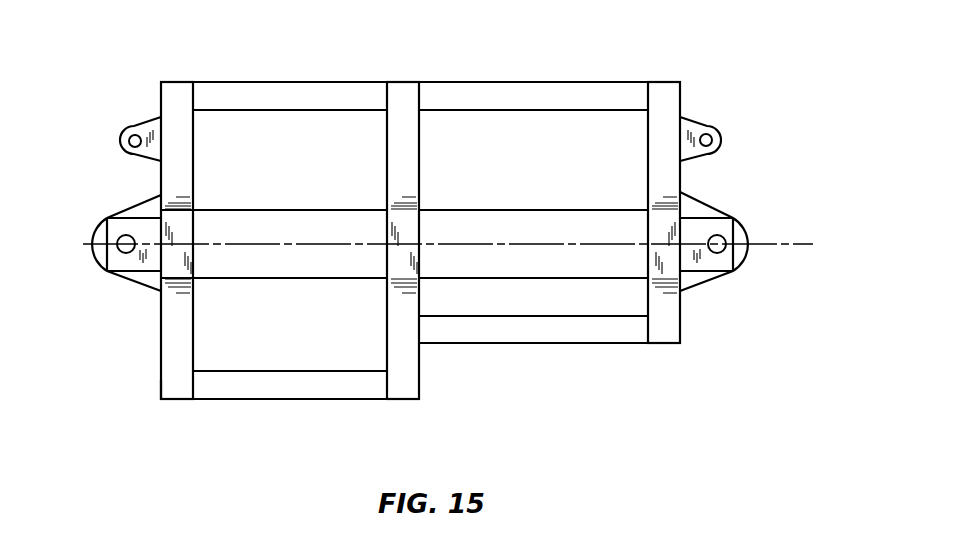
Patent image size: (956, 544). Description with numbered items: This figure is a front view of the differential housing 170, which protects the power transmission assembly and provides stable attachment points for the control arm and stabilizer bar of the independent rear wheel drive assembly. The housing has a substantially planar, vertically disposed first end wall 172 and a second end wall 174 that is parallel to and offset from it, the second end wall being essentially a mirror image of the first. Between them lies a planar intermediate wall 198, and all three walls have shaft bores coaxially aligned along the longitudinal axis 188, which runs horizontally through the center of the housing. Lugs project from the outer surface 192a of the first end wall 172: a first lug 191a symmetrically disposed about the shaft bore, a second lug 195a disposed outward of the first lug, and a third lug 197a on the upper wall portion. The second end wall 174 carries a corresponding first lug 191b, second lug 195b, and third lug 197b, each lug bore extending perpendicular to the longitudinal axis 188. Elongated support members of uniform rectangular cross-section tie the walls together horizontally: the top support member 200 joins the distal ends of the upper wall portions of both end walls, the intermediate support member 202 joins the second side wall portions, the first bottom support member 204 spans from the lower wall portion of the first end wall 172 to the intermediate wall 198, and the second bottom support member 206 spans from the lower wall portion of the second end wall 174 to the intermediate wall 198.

The differential housing 170 is at (610, 48).
The first end wall 172 is at (169, 331).
The second end wall 174 is at (670, 330).
The longitudinal axis 188 is at (783, 242).
The first lug 191a is at (101, 222).
The first lug 191b is at (738, 222).
The outer surface 192a is at (161, 386).
The second lug 195a is at (127, 263).
The second lug 195b is at (716, 264).
The third lug 197a is at (128, 130).
The third lug 197b is at (715, 124).
The intermediate wall 198 is at (408, 142).
The top support member 200 is at (541, 90).
The intermediate support member 202 is at (557, 218).
The first bottom support member 204 is at (283, 390).
The second bottom support member 206 is at (540, 338).